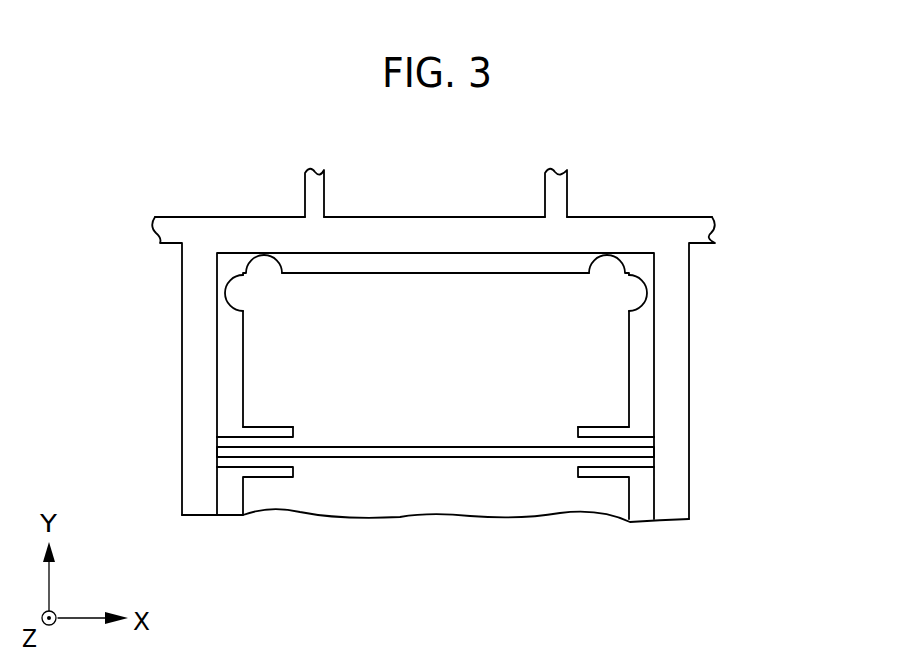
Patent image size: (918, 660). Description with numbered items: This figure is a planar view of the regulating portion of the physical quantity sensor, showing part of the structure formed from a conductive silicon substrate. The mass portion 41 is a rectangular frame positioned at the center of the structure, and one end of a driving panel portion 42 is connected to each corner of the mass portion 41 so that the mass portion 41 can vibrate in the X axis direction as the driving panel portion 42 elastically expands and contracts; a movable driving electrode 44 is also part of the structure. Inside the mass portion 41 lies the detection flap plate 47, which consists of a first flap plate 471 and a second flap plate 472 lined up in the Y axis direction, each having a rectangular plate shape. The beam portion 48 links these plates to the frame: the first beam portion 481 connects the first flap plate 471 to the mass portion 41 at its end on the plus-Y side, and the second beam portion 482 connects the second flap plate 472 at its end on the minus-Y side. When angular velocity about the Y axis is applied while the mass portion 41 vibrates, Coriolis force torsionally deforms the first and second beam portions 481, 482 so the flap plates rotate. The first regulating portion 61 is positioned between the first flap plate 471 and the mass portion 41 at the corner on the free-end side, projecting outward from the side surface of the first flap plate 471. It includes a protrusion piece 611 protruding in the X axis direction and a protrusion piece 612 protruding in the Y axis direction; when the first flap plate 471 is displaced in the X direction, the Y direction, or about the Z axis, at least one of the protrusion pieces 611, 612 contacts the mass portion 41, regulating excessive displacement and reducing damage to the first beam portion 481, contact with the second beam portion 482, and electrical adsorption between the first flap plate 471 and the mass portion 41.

The mass portion 41 is at (675, 362).
The driving panel portion 42 is at (175, 227).
The movable driving electrode 44 is at (312, 183).
The detection flap plate 47 is at (435, 373).
The first flap plate 471 is at (442, 297).
The second flap plate 472 is at (424, 493).
The beam portion 48 is at (434, 469).
The first beam portion 481 is at (635, 445).
The second beam portion 482 is at (240, 463).
The first regulating portion 61 is at (434, 222).
The protrusion piece 611 is at (235, 295).
The protrusion piece 612 is at (263, 267).